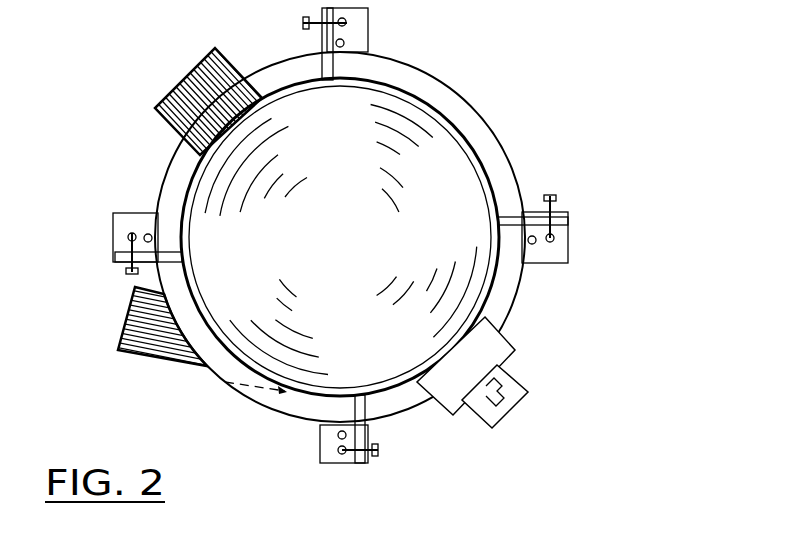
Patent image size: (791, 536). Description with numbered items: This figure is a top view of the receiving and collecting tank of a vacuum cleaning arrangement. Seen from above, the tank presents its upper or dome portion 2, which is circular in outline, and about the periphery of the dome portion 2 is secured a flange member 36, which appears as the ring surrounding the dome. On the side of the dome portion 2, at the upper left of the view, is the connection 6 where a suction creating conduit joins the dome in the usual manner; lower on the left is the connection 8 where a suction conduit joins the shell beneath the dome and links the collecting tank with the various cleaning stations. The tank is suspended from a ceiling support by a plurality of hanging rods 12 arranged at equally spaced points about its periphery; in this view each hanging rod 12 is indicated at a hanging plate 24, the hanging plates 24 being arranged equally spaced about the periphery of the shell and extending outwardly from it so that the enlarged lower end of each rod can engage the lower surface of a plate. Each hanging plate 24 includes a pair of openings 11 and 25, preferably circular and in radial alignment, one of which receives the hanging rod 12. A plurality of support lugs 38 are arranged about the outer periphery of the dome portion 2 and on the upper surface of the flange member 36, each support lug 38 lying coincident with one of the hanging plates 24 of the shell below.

The dome portion 2 is at (348, 247).
The suction creating conduit connection 6 is at (183, 78).
The suction conduit connection 8 is at (127, 322).
The opening 11 is at (534, 244).
The hanging rod 12 is at (344, 43).
The hanging plate 24 is at (368, 13).
The opening 25 is at (347, 23).
The flange member 36 is at (493, 143).
The support lug 38 is at (525, 215).